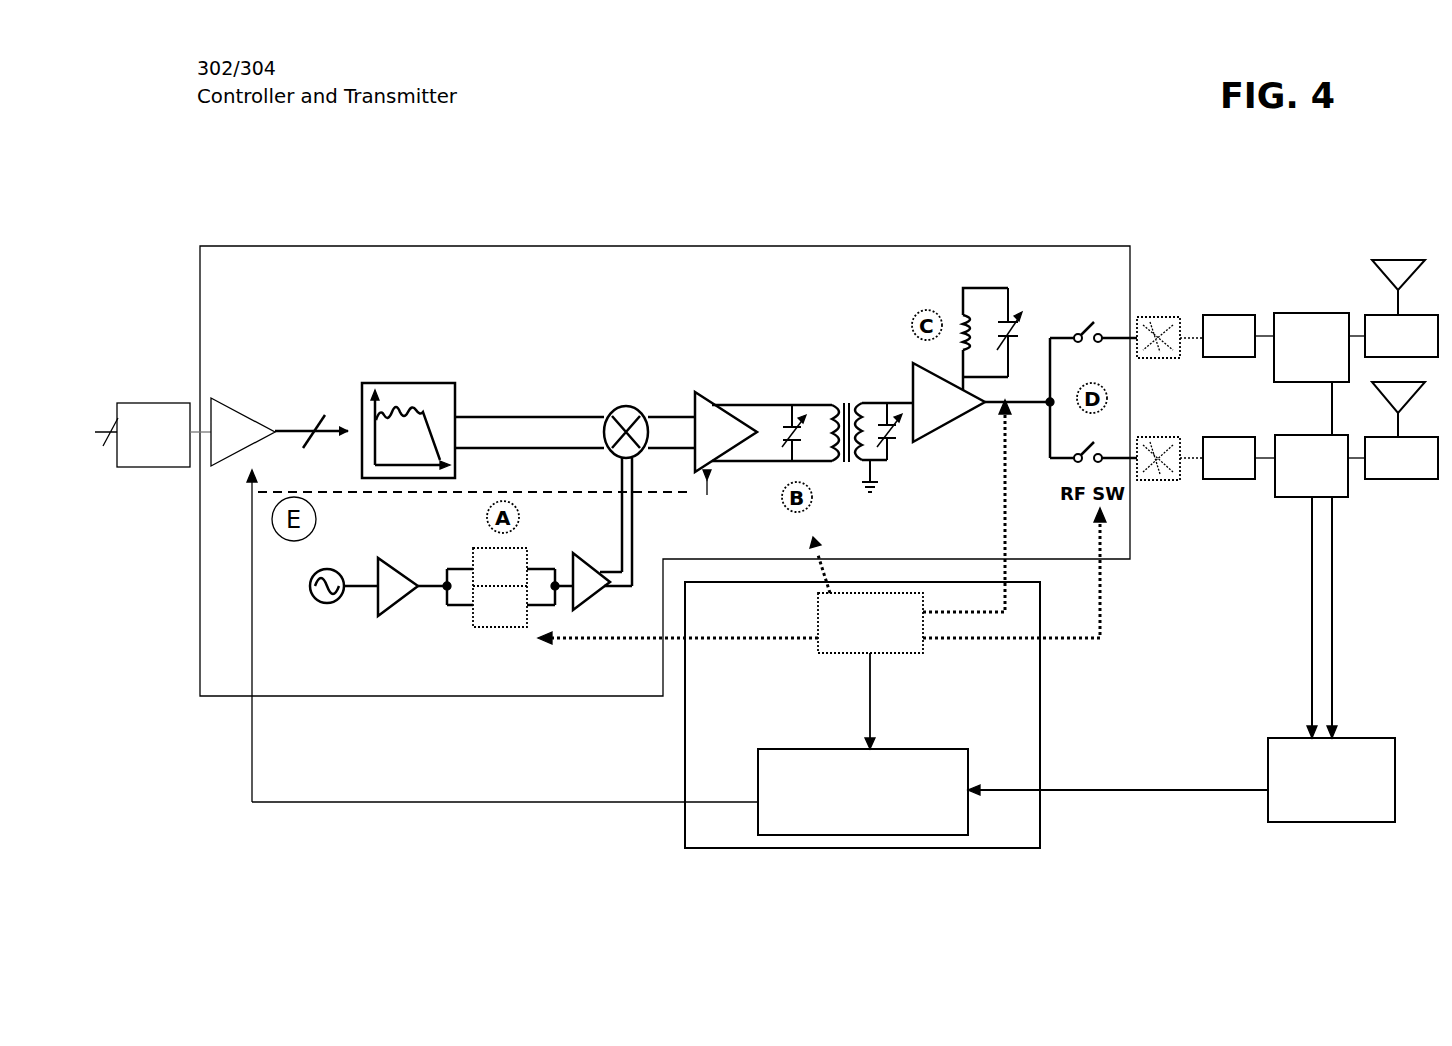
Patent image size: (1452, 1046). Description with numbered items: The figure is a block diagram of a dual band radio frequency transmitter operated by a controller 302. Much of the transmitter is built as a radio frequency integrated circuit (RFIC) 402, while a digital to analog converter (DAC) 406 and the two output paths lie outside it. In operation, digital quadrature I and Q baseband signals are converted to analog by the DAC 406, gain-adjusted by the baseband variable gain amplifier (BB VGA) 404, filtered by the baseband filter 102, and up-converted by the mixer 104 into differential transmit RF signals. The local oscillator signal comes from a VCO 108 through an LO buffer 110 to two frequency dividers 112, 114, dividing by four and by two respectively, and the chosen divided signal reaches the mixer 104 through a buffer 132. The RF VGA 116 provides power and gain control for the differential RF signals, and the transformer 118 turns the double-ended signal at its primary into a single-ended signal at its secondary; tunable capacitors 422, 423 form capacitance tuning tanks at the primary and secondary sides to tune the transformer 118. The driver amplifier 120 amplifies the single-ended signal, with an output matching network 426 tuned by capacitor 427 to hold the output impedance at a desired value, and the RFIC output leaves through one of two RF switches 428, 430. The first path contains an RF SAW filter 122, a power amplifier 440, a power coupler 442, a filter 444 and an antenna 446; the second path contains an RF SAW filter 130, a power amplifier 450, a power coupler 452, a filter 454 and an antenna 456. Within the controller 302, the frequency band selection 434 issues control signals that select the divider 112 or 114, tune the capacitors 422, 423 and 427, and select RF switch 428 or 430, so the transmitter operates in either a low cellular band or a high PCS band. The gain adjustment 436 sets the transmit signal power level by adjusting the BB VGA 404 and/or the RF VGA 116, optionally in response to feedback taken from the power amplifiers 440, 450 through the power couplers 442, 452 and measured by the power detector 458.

The radio frequency integrated circuit (RFIC) 402 is at (665, 454).
The digital to analog converter (DAC) 406 is at (153, 418).
The baseband variable gain amplifier (BB VGA) 404 is at (280, 563).
The baseband filter 102 is at (483, 400).
The mixer 104 is at (616, 463).
The RF VGA 116 is at (743, 441).
The capacitor Ctune 422 is at (796, 397).
The transformer 118 is at (869, 414).
The capacitor Ctune2 423 is at (902, 380).
The driver amplifier 120 is at (969, 432).
The output matching network 426 is at (963, 328).
The capacitor Ctune3 427 is at (1036, 313).
The RF switch 428 is at (1093, 320).
The RF switch 430 is at (1093, 443).
The RF SAW filter 122 is at (1170, 309).
The power amplifier 440 is at (1238, 319).
The power coupler 442 is at (1319, 358).
The filter 444 is at (1396, 322).
The antenna 446 is at (1404, 271).
The RF SAW filter 130 is at (1170, 454).
The power amplifier 450 is at (1239, 445).
The power coupler 452 is at (1320, 575).
The filter 454 is at (1401, 470).
The antenna 456 is at (1385, 409).
The VCO 108 is at (341, 621).
The LO buffer 110 is at (421, 617).
The frequency divider (divide by 4) 112 is at (509, 569).
The frequency divider (divide by 2) 114 is at (503, 662).
The buffer 132 is at (594, 547).
The controller 302 is at (886, 715).
The frequency band selection 434 is at (822, 574).
The gain adjustment 436 is at (760, 778).
The power detector 458 is at (1331, 762).